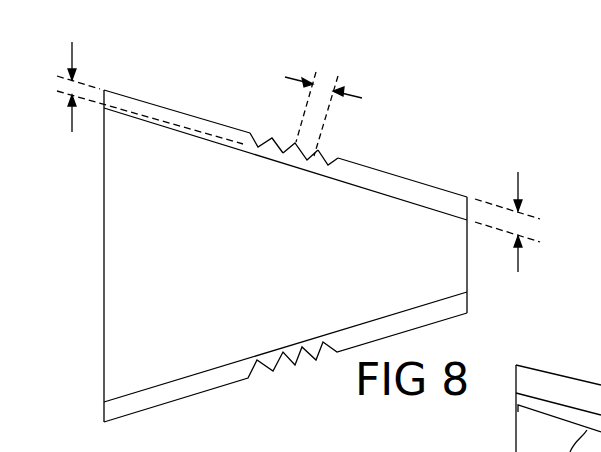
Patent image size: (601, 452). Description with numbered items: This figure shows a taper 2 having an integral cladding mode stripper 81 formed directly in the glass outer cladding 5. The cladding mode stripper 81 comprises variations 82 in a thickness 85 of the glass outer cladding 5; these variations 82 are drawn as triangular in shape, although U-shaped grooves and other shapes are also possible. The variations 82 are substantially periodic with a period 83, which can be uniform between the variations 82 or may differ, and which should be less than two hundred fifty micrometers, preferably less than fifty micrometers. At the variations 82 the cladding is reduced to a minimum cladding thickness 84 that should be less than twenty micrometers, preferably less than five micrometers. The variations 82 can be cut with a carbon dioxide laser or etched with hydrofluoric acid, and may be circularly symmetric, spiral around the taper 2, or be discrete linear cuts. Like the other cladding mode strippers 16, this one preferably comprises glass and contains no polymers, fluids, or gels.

The taper 2 is at (164, 404).
The glass outer cladding 5 is at (393, 175).
The cladding mode stripper 16 is at (283, 162).
The cladding mode stripper 81 is at (272, 137).
The variations 82 is at (327, 162).
The period 83 is at (287, 76).
The minimum cladding thickness 84 is at (72, 60).
The thickness 85 is at (518, 184).